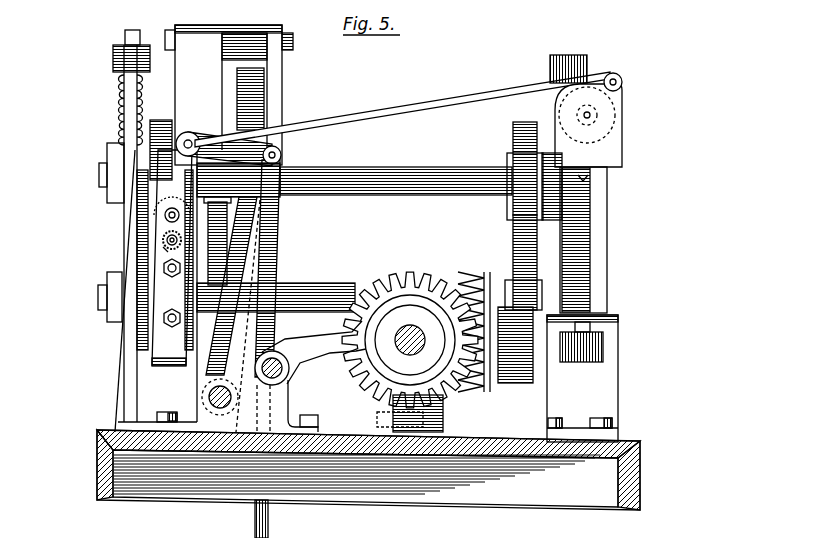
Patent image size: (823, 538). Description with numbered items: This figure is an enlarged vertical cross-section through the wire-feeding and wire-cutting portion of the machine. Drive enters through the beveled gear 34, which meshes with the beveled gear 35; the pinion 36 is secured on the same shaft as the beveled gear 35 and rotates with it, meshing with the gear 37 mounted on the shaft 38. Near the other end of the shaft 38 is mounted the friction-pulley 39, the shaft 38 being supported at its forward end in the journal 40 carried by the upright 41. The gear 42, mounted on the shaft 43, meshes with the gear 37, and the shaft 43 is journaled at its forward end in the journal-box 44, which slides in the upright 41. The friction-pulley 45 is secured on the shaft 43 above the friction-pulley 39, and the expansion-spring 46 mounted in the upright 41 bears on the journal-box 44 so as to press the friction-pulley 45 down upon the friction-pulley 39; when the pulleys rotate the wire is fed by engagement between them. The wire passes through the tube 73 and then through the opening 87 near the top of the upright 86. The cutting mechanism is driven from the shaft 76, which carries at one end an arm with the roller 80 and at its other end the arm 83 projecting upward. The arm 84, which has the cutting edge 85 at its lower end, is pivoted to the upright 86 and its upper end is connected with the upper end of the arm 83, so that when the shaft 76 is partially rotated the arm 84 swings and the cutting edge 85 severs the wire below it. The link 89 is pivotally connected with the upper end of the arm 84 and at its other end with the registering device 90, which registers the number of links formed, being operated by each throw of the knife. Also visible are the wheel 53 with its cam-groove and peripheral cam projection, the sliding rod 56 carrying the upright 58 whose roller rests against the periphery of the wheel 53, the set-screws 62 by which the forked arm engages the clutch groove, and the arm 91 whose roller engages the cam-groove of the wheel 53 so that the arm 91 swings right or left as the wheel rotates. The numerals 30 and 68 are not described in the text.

The crank arm 30 is at (405, 345).
The beveled gear 34 is at (458, 394).
The beveled gear 35 is at (483, 403).
The pinion 36 is at (515, 359).
The gear 37 is at (510, 262).
The shaft 38 is at (336, 298).
The friction-pulley 39 is at (160, 242).
The journal 40 is at (107, 283).
The upright 41 is at (100, 172).
The gear 42 is at (512, 131).
The shaft 43 is at (420, 165).
The journal-box 44 is at (113, 158).
The friction-pulley 45 is at (163, 120).
The expansion-spring 46 is at (113, 78).
The wheel 53 is at (278, 98).
The rod 56 is at (290, 370).
The upright 58 is at (218, 236).
The set-screws 62 is at (415, 290).
The link 68 is at (228, 149).
The tube 73 is at (163, 224).
The shaft 76 is at (216, 409).
The roller 80 is at (275, 194).
The arm 83 is at (250, 249).
The arm 84 is at (172, 258).
The cutting edge 85 is at (168, 252).
The upright 86 is at (156, 291).
The opening 87 is at (166, 243).
The link 89 is at (417, 104).
The registering device 90 is at (620, 113).
The arm 91 is at (280, 110).